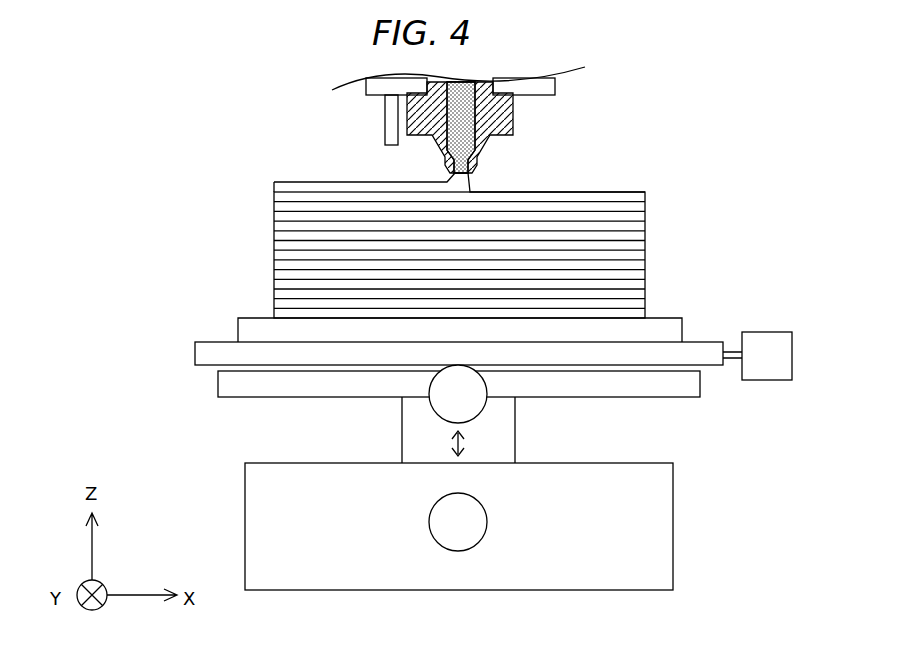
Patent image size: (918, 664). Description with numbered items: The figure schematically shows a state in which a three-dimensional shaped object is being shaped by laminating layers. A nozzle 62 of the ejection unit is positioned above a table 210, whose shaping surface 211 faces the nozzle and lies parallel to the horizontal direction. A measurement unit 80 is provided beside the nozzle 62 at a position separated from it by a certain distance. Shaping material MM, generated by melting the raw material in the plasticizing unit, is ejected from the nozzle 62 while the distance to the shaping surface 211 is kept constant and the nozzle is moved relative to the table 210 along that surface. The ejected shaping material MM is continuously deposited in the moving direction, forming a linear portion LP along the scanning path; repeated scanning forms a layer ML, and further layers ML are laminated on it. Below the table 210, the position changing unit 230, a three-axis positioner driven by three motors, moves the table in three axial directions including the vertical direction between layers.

The nozzle 62 is at (468, 174).
The measurement unit 80 is at (385, 123).
The shaping material MM is at (467, 116).
The linear portion LP is at (307, 183).
The layer ML is at (274, 247).
The table 210 is at (663, 332).
The shaping surface 211 is at (652, 320).
The position changing unit 230 is at (715, 453).